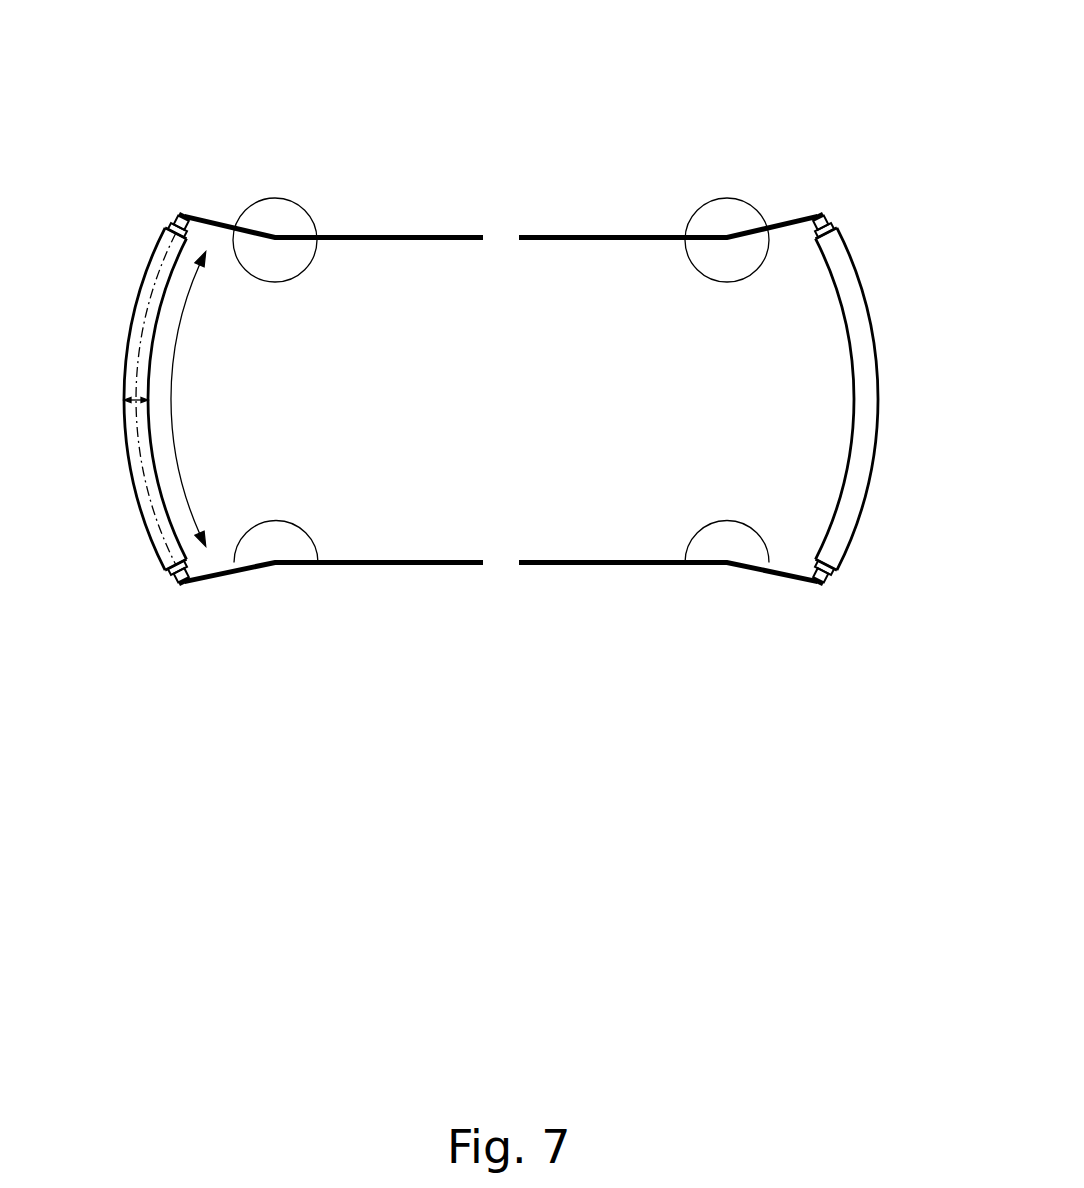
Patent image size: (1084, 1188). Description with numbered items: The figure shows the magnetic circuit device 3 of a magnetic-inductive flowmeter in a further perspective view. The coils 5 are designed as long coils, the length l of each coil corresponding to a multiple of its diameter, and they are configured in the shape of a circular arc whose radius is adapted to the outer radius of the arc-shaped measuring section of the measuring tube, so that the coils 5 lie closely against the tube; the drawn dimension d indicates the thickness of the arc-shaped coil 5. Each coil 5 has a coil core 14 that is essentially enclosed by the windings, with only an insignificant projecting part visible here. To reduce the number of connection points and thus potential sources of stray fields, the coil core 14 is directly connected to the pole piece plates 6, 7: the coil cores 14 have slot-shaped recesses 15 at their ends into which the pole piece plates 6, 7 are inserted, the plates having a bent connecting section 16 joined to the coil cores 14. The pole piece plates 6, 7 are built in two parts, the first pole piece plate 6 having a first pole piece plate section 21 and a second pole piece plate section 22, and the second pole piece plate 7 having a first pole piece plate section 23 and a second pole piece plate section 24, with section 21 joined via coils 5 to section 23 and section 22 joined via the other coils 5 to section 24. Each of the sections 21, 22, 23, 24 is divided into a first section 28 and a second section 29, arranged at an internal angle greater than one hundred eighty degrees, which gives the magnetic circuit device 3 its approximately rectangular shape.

The magnetic circuit device 3 is at (133, 120).
The coil 5 is at (145, 297).
The first pole piece plate 6 is at (501, 173).
The second pole piece plate 7 is at (501, 629).
The coil core 14 is at (173, 222).
The recess 15 is at (173, 580).
The connecting section 16 is at (528, 627).
The first pole piece plate section 21 is at (342, 235).
The second pole piece plate section 22 is at (648, 237).
The first pole piece plate section 23 is at (328, 565).
The second pole piece plate section 24 is at (648, 565).
The first section 28 is at (400, 237).
The second section 29 is at (220, 225).
The band thickness d is at (130, 401).
The length of the coil l is at (167, 392).